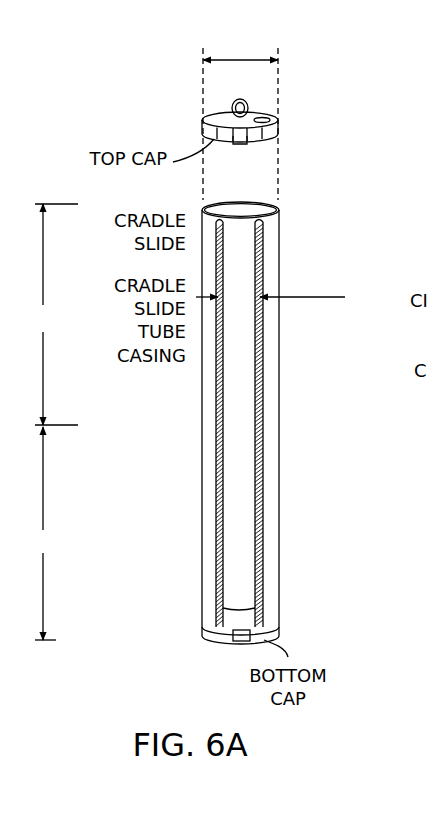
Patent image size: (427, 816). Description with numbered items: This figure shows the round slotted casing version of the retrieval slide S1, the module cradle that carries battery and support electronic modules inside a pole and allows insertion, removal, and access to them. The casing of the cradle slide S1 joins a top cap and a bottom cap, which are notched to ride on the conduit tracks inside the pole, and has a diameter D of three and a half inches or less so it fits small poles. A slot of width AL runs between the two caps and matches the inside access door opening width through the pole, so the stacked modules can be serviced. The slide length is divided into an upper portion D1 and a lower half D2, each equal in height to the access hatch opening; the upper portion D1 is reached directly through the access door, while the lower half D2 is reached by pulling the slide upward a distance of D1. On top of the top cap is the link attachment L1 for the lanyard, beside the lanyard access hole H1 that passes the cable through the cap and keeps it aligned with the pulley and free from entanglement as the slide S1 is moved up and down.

The link attachment L1 is at (232, 104).
The lanyard access hole H1 is at (270, 117).
The diameter D is at (240, 119).
The upper portion of the cradle slide D1 is at (110, 365).
The lower half of the cradle slide D2 is at (110, 557).
The slot width AL is at (277, 276).
The retrieval slide S1 is at (310, 356).